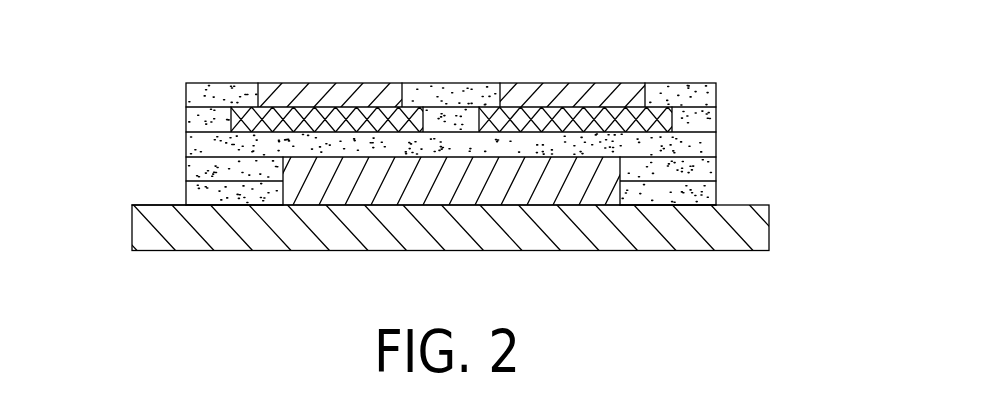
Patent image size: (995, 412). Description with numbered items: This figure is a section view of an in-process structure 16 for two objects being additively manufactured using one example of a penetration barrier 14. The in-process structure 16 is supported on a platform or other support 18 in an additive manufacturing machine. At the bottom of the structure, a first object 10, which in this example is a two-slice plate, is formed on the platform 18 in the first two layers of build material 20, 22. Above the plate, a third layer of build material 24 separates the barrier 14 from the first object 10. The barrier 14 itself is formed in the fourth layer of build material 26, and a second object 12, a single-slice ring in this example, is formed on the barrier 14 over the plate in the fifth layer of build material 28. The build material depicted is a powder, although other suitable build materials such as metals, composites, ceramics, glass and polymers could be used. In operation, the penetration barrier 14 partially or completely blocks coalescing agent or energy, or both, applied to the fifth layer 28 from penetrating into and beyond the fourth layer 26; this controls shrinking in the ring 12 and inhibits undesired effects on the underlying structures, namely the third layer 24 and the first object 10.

The first object 10 is at (572, 195).
The second object 12 is at (552, 90).
The penetration barrier 14 is at (242, 117).
The in-process structure 16 is at (128, 127).
The platform 18 is at (162, 215).
The first layer of build material 20 is at (705, 196).
The second layer of build material 22 is at (705, 172).
The third layer of build material 24 is at (706, 147).
The fourth layer of build material 26 is at (484, 89).
The fifth layer of build material 28 is at (484, 67).